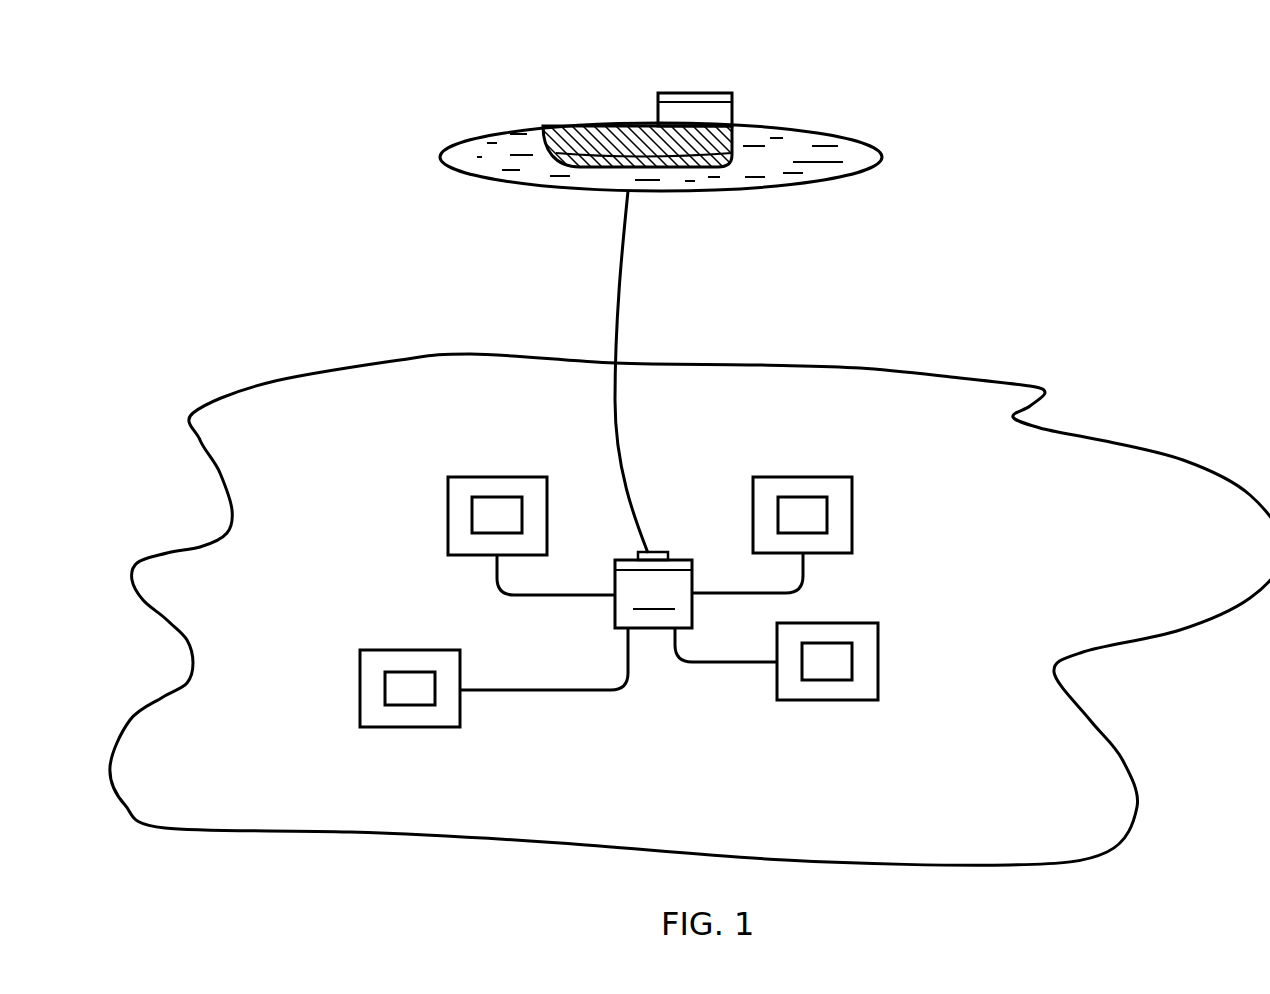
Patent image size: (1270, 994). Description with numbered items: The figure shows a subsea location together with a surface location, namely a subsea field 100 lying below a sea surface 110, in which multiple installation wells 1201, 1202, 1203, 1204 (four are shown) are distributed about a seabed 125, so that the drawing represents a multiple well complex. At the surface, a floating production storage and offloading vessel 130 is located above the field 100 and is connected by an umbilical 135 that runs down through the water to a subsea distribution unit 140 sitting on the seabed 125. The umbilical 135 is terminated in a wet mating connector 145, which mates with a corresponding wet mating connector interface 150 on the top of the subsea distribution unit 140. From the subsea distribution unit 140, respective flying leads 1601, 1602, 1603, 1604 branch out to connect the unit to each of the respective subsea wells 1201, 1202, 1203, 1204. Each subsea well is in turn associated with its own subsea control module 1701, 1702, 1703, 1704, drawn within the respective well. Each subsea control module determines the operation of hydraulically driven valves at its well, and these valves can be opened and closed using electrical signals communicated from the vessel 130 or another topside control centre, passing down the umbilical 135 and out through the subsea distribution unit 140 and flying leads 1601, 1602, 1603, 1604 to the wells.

The subsea field 100 is at (223, 787).
The sea surface 110 is at (818, 162).
The seabed 125 is at (1004, 822).
The floating production storage and offloading (FPSO) vessel 130 is at (547, 93).
The umbilical 135 is at (624, 288).
The subsea distribution unit (SDU) 140 is at (653, 596).
The wet mating connector 145 is at (660, 552).
The wet mating connector interface 150 is at (627, 563).
The installation well 1201 is at (447, 489).
The installation well 1202 is at (364, 718).
The installation well 1203 is at (853, 487).
The installation well 1204 is at (876, 690).
The flying lead 1601 is at (525, 597).
The flying lead 1602 is at (498, 692).
The flying lead 1603 is at (715, 597).
The flying lead 1604 is at (718, 664).
The subsea control module (SCM) 1701 is at (497, 505).
The subsea control module (SCM) 1702 is at (414, 697).
The subsea control module (SCM) 1703 is at (805, 505).
The subsea control module (SCM) 1704 is at (818, 664).